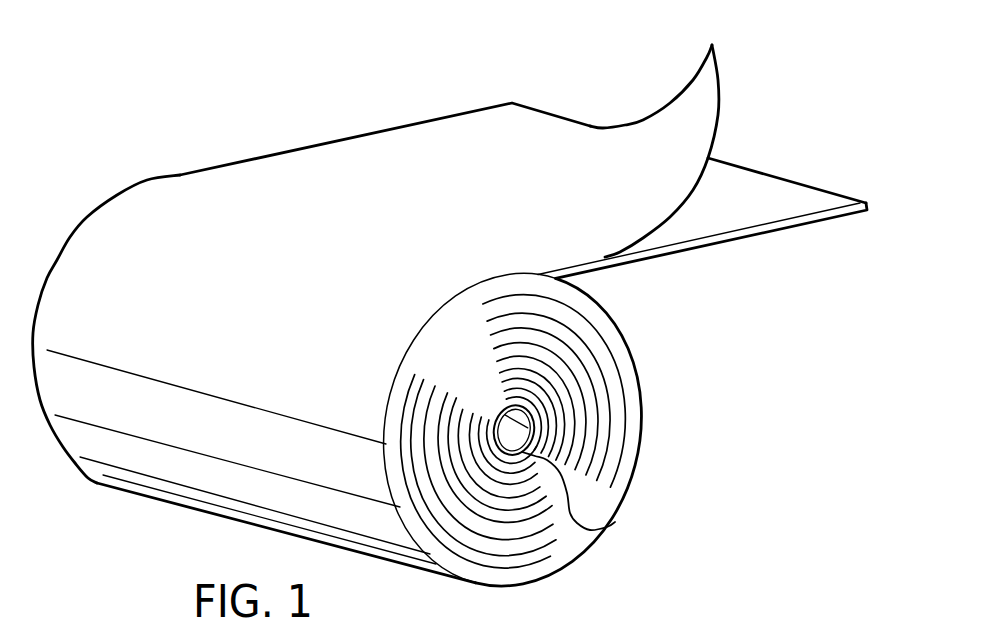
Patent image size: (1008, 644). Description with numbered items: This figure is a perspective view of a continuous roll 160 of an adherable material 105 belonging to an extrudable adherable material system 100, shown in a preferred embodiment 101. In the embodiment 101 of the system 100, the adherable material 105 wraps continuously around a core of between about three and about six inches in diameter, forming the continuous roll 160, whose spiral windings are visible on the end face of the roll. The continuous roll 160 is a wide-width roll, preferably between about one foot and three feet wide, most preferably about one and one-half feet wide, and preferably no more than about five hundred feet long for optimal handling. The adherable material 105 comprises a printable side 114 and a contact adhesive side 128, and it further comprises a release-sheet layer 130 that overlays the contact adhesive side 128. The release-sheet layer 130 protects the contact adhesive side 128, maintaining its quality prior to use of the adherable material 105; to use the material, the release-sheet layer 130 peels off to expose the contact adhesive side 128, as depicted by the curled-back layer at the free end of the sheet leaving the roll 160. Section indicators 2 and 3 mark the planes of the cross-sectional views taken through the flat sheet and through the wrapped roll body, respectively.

The extrudable adherable material system 100 is at (151, 71).
The embodiment of extrudable adherable material system 101 is at (286, 111).
The adherable material 105 is at (272, 163).
The printable side 114 is at (835, 216).
The contact adhesive side 128 is at (823, 197).
The release-sheet layer 130 is at (707, 70).
The continuous roll 160 is at (674, 388).
The section line 2- 2 is at (763, 200).
The section line 3- 3 is at (505, 130).